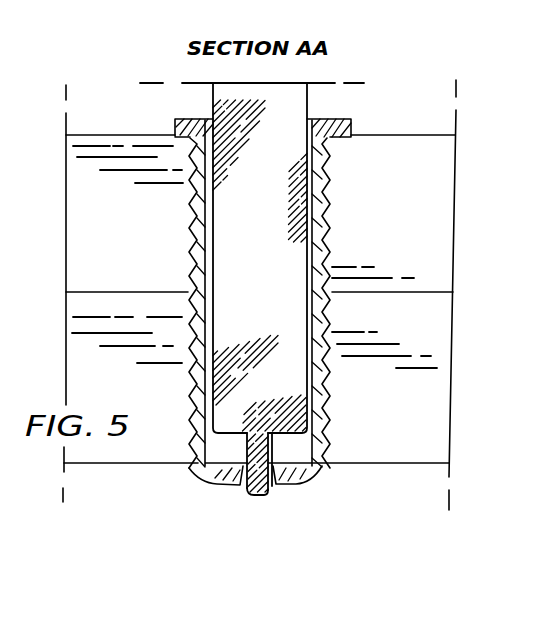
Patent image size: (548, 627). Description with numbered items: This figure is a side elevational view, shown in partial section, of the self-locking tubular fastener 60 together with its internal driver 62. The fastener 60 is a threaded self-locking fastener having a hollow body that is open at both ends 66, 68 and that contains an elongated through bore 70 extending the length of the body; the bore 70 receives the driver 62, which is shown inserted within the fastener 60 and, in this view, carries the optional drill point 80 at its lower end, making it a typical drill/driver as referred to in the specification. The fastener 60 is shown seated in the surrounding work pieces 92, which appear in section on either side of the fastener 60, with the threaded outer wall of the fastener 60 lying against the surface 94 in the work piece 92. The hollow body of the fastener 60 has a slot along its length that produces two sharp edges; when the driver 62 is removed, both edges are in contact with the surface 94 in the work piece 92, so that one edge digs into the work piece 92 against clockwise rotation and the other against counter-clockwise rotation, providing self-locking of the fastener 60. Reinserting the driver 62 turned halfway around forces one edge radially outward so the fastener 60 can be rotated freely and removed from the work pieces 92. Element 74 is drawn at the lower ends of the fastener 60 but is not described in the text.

The tubular fastener 60 is at (243, 294).
The internal driver 62 is at (288, 200).
The end of hollow body 66 is at (202, 112).
The end of hollow body 68 is at (274, 487).
The through bore 70 is at (317, 110).
The crimped end lips 74 is at (233, 474).
The drill point 80 is at (255, 503).
The work piece 92 is at (259, 295).
The surface 94 is at (192, 277).